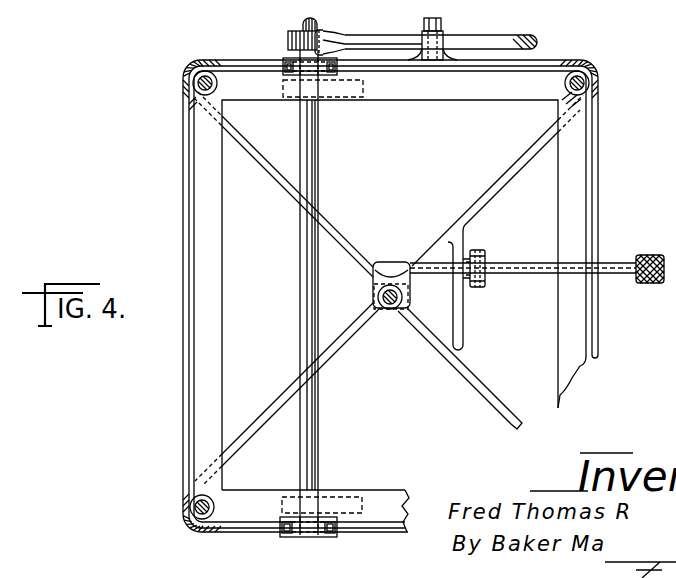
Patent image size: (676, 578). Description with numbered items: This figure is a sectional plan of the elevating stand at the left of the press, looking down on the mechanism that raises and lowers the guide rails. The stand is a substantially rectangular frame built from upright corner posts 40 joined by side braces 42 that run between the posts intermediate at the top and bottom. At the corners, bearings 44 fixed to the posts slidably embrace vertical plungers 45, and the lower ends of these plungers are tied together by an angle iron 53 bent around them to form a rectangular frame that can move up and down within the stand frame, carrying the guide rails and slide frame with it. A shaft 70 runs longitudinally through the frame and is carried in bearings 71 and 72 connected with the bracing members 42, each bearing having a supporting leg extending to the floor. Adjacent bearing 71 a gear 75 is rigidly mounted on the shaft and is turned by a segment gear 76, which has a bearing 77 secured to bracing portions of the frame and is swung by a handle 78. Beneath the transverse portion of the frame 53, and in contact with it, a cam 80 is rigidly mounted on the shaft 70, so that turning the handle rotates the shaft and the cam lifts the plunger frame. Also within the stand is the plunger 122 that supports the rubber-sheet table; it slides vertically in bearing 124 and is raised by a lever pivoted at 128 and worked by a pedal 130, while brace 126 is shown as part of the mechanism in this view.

The corner posts 40 is at (592, 62).
The side braces 42 is at (599, 180).
The bearings 44 is at (572, 104).
The vertical plungers 45 is at (566, 90).
The angle iron 53 is at (197, 347).
The shaft 70 is at (316, 276).
The bearing 71 is at (285, 62).
The bearing 72 is at (340, 536).
The gear 75 is at (290, 40).
The segment gear 76 is at (328, 33).
The bearing 77 is at (445, 56).
The handle 78 is at (500, 35).
The cam 80 is at (362, 88).
The plunger 122 is at (380, 298).
The bearing 124 is at (390, 311).
The diagonal brace 126 is at (452, 363).
The pivot 128 is at (478, 251).
The pedal 130 is at (640, 254).